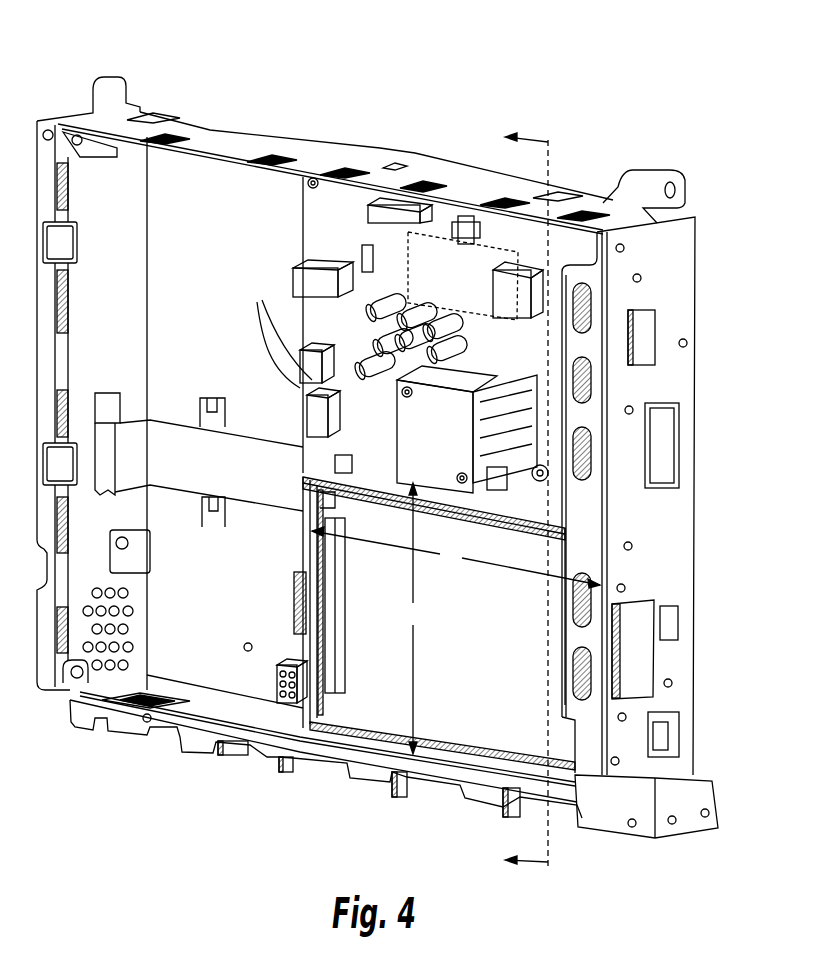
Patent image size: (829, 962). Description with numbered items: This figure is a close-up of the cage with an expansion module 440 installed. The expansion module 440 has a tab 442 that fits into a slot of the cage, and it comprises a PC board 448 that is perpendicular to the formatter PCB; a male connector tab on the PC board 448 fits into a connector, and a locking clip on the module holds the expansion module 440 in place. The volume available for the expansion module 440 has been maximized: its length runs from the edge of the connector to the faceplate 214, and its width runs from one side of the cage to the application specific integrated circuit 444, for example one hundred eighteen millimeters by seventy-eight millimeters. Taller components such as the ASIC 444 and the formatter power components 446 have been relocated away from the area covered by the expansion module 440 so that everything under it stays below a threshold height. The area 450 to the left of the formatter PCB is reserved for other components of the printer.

The area 450 is at (218, 243).
The faceplate 214 is at (672, 516).
The tab 442 is at (628, 626).
The Application specific integrated circuit (ASIC) 444 is at (447, 441).
The formatter power components 446 is at (360, 371).
The PC board 448 is at (318, 489).
The expansion module 440 is at (377, 700).